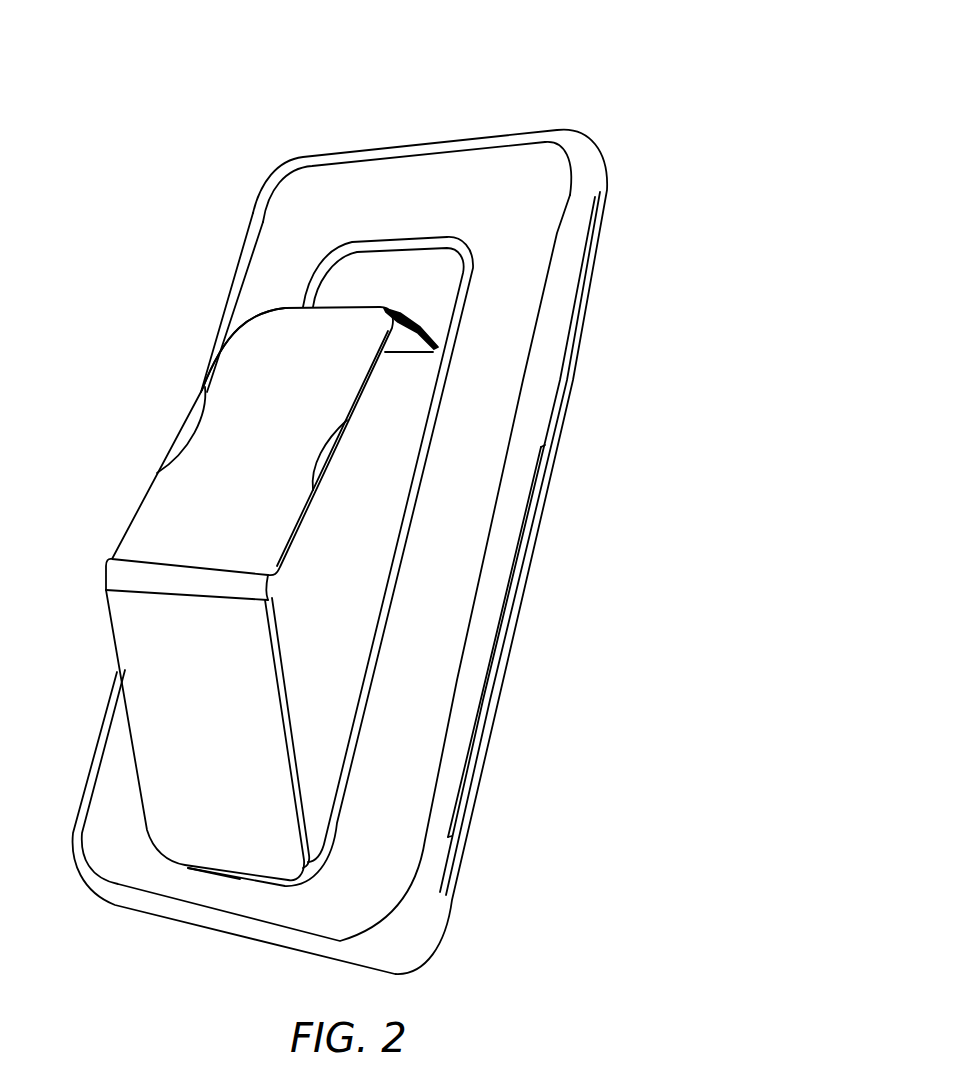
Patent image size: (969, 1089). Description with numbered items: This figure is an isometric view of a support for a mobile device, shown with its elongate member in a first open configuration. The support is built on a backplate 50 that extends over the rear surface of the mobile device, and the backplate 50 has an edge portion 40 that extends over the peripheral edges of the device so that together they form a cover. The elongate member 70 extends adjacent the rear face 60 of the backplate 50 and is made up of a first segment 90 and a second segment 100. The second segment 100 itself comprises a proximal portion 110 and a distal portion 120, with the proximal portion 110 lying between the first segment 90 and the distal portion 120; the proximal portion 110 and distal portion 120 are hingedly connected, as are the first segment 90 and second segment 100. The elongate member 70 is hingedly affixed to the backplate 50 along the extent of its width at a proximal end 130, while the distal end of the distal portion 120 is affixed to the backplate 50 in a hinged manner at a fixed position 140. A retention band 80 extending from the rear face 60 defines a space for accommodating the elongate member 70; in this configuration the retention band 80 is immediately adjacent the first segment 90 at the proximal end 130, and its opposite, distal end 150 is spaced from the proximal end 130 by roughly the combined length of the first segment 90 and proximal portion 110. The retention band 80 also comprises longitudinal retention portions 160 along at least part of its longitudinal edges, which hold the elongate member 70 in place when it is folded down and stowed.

The edge portion 40 is at (412, 933).
The backplate 50 is at (493, 177).
The rear face 60 is at (525, 198).
The elongate member 70 is at (104, 616).
The retention band 80 is at (353, 740).
The first segment 90 is at (163, 758).
The second segment 100 is at (110, 527).
The proximal portion 110 is at (177, 520).
The distal portion 120 is at (405, 335).
The proximal end 130 is at (228, 872).
The fixed position 140 is at (405, 335).
The distal end of retention band 150 is at (397, 243).
The longitudinal retention portions 160 is at (287, 310).